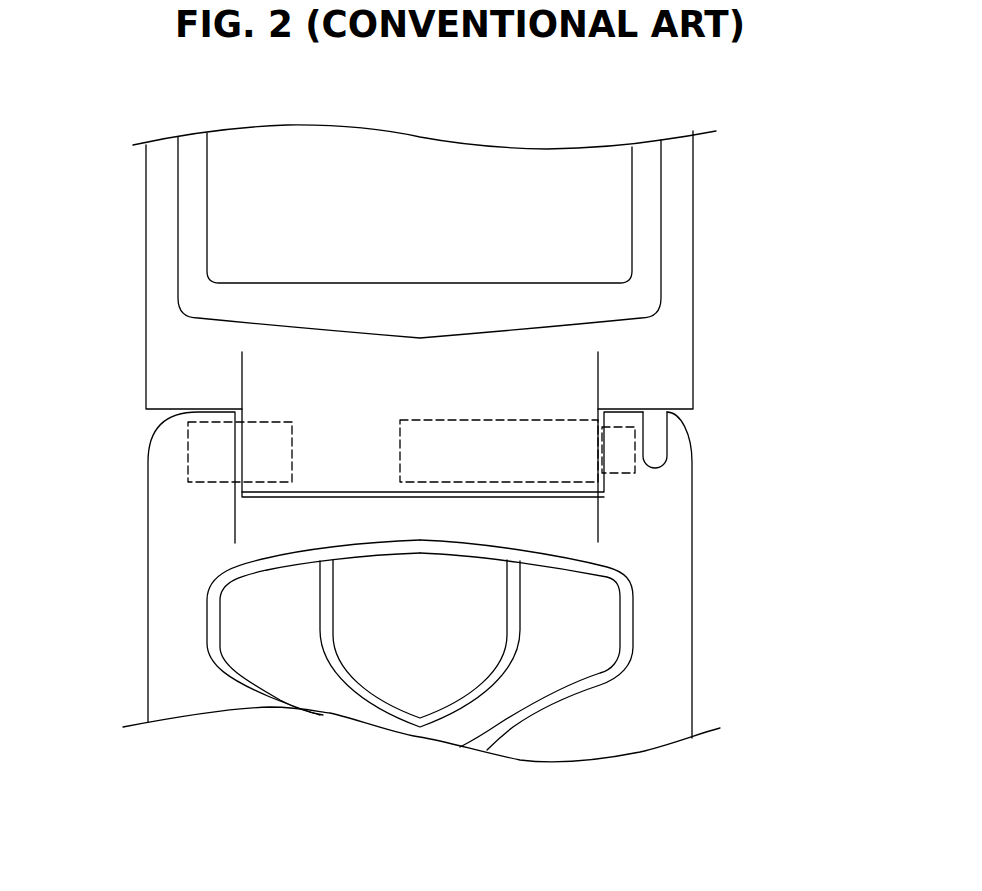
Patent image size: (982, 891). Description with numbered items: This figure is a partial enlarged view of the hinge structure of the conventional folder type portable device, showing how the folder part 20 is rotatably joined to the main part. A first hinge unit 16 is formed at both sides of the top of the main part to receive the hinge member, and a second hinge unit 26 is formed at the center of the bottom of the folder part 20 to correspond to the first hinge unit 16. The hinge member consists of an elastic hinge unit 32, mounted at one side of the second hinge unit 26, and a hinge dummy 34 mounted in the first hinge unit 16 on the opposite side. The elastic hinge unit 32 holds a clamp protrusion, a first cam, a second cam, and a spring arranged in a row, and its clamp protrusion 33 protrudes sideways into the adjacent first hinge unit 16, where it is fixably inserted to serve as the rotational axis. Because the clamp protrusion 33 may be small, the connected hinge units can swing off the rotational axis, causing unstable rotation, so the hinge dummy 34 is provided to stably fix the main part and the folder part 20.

The folder part 20 is at (722, 306).
The first hinge unit 16 is at (675, 452).
The second hinge unit 26 is at (347, 455).
The elastic hinge unit 32 is at (538, 420).
The clamp protrusion 33 is at (618, 475).
The hinge dummy 34 is at (188, 452).